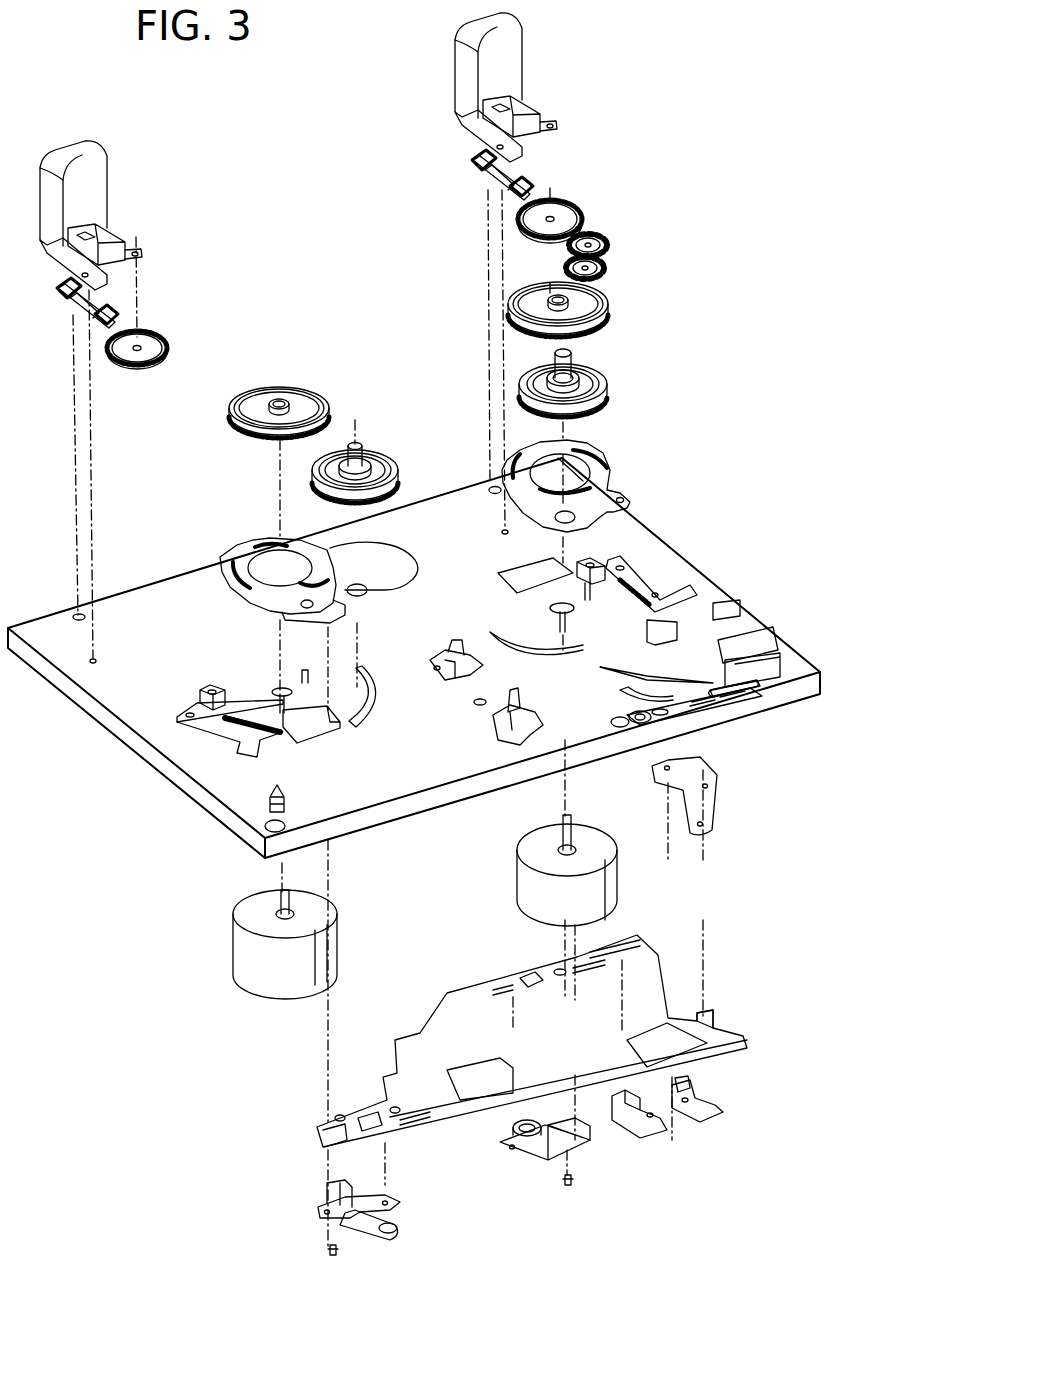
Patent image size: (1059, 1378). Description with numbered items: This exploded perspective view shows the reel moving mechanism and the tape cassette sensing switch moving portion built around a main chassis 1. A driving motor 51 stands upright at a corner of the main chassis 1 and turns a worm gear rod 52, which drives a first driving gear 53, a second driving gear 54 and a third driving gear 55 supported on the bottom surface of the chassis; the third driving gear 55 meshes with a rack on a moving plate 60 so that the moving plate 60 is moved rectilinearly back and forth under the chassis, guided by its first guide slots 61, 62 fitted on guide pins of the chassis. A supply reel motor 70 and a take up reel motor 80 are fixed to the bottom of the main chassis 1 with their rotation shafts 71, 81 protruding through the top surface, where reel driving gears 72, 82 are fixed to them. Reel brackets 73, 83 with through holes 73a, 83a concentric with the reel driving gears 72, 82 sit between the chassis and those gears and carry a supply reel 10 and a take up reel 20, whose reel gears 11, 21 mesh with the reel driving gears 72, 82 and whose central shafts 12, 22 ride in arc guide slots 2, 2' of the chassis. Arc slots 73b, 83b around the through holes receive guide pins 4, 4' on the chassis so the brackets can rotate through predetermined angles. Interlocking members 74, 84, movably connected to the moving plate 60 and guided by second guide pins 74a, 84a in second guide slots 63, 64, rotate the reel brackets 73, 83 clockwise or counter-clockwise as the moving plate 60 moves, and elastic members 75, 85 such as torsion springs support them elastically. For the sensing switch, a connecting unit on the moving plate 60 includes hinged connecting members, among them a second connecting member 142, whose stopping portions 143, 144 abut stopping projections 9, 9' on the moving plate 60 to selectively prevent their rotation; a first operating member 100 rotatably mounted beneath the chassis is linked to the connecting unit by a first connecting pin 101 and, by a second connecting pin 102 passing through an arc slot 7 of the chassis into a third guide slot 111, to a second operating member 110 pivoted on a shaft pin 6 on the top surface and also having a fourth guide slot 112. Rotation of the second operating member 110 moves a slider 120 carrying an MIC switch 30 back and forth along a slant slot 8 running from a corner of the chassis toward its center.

The main chassis 1 is at (130, 698).
The arc guide slot 2 is at (379, 679).
The arc guide slot 2' is at (515, 625).
The guide pin 4 is at (258, 694).
The guide pin 4' is at (591, 594).
The shaft pin 6 is at (629, 714).
The arc slot 7 is at (620, 688).
The slant slot 8 is at (627, 665).
The stopping projection 9 is at (651, 1025).
The stopping projection 9' is at (719, 988).
The supply reel 10 is at (387, 447).
The reel gear 11 is at (398, 483).
The central shaft 12 is at (358, 444).
The take up reel 20 is at (558, 389).
The reel gear 21 is at (610, 392).
The central shaft 22 is at (580, 347).
The MIC switch 30 is at (770, 635).
The driving motor 51 is at (465, 72).
The worm gear rod 52 is at (490, 186).
The first driving gear 53 is at (565, 205).
The second driving gear 54 is at (600, 234).
The third driving gear 55 is at (603, 262).
The moving plate 60 is at (505, 1055).
The first guide slot 61 is at (425, 1128).
The first guide slot 62 is at (625, 962).
The second guide slot 63 is at (325, 1125).
The second guide slot 64 is at (560, 968).
The supply reel motor 70 is at (252, 936).
The rotation shaft 71 is at (275, 905).
The reel driving gear 72 is at (232, 410).
The reel bracket 73 is at (272, 553).
The through hole 73a is at (240, 546).
The arc slot 73b is at (270, 546).
The interlocking member 74 is at (318, 1205).
The second guide pin 74a is at (328, 1250).
The elastic member 75 is at (400, 1228).
The take up reel motor 80 is at (533, 866).
The rotation shaft 81 is at (560, 835).
The reel driving gear 82 is at (598, 293).
The reel bracket 83 is at (602, 477).
The through hole 83a is at (585, 484).
The arc slot 83b is at (598, 450).
The interlocking member 84 is at (523, 1167).
The second guide pin 84a is at (575, 1183).
The elastic member 85 is at (512, 1138).
The first operating member 100 is at (698, 801).
The first connecting pin 101 is at (663, 768).
The second connecting pin 102 is at (703, 825).
The second operating member 110 is at (790, 690).
The third guide slot 111 is at (675, 708).
The fourth guide slot 112 is at (745, 700).
The slider 120 is at (775, 665).
The second connecting member 142 is at (737, 1093).
The stopping portion 143 is at (628, 1100).
The stopping portion 144 is at (700, 1078).